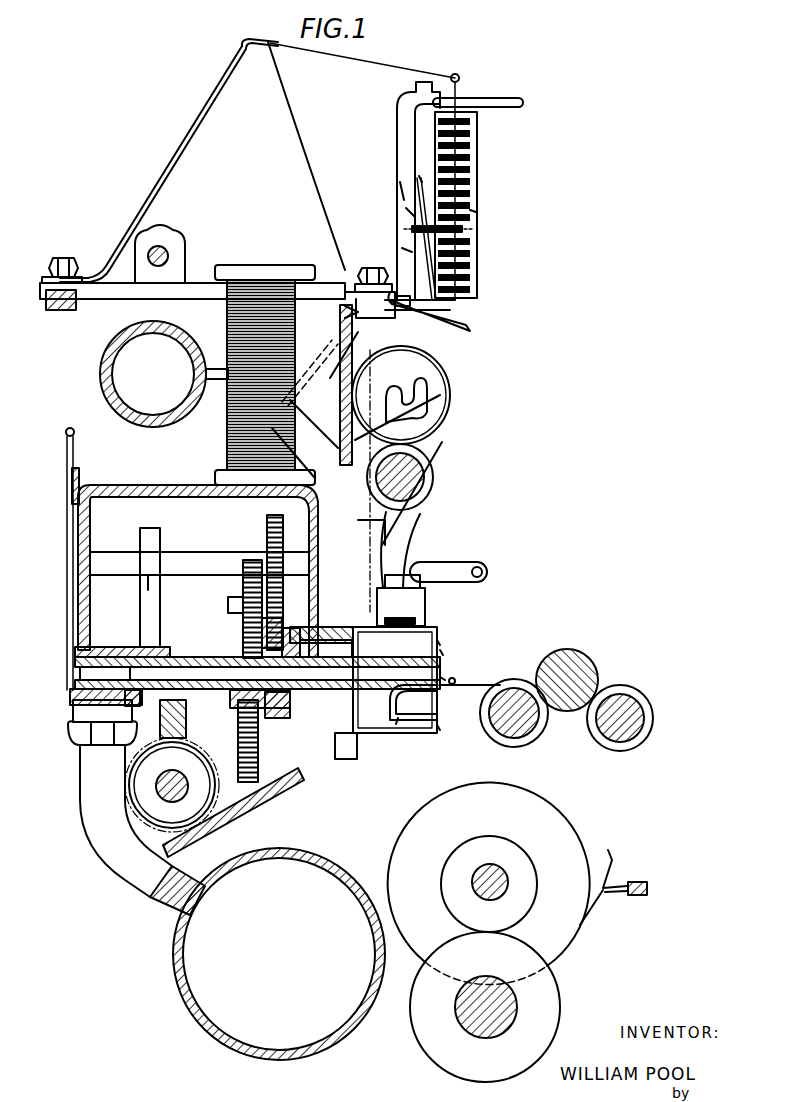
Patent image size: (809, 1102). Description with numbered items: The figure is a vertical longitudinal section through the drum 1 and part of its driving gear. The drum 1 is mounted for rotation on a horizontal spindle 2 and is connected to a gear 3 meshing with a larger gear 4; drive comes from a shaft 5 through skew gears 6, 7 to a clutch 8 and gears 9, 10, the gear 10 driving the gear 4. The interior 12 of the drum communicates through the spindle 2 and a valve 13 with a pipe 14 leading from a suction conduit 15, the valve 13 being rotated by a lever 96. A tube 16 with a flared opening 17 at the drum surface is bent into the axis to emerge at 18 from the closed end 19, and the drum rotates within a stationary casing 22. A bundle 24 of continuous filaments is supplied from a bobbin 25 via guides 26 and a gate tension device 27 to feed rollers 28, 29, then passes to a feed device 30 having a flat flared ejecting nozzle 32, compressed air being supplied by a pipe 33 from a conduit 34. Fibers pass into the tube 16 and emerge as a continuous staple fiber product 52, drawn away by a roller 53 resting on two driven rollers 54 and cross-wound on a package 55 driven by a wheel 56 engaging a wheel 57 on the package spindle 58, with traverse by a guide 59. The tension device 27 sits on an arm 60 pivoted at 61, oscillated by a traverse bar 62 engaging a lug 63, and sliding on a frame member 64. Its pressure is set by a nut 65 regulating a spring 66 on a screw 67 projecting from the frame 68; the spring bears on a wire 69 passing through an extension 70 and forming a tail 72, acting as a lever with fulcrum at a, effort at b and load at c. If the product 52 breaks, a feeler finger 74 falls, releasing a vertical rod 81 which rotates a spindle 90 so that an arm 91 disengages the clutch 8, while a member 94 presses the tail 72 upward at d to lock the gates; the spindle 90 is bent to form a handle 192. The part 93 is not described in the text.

The drum 1 is at (437, 640).
The horizontal spindle 2 is at (196, 657).
The gear 3 is at (276, 718).
The larger gear 4 is at (283, 536).
The shaft 5 is at (188, 790).
The skew gear 6 is at (200, 774).
The skew gear 7 is at (186, 738).
The clutch 8 is at (152, 706).
The gear 9 is at (259, 774).
The gear 10 is at (244, 645).
The interior of the drum 12 is at (363, 680).
The valve 13 is at (102, 662).
The pipe 14 is at (98, 860).
The suction conduit 15 is at (279, 954).
The tube 16 is at (418, 718).
The flared opening 17 is at (396, 722).
The outlet 18 is at (442, 678).
The closed end 19 is at (442, 652).
The stationary casing 22 is at (438, 726).
The bundle of continuous filaments 24 is at (320, 192).
The bobbin 25 is at (250, 290).
The guides 26 is at (459, 80).
The gate tension device 27 is at (470, 182).
The feed roller 28 is at (452, 414).
The feed roller 29 is at (435, 484).
The feed device 30 is at (401, 600).
The flat flared ejecting nozzle 32 is at (416, 620).
The pipe 33 is at (310, 424).
The conduit 34 is at (164, 374).
The continuous staple fiber product 52 is at (454, 685).
The roller 53 is at (580, 666).
The driven rollers 54 is at (590, 726).
The package 55 is at (542, 810).
The wheel 56 is at (556, 1012).
The wheel 57 is at (524, 908).
The package spindle 58 is at (472, 882).
The guide 59 is at (613, 898).
The arm 60 is at (200, 283).
The pivot 61 is at (62, 311).
The reciprocating traverse bar 62 is at (178, 252).
The lug 63 is at (160, 246).
The member 64 is at (344, 316).
The nut 65 is at (470, 222).
The spring 66 is at (402, 248).
The screw 67 is at (466, 230).
The frame 68 is at (398, 195).
The wire 69 is at (406, 210).
The extension 70 is at (404, 312).
The tail 72 is at (332, 360).
The feeler finger 74 is at (456, 682).
The vertical rod 81 is at (338, 760).
The spindle 90 is at (198, 566).
The arm 91 is at (160, 636).
The follower 93 is at (415, 400).
The member 94 is at (353, 368).
The lever 96 is at (66, 560).
The handle 192 is at (492, 574).
The fulcrum a is at (400, 182).
The effort point b is at (424, 179).
The load point c is at (394, 289).
The effort point d is at (352, 310).